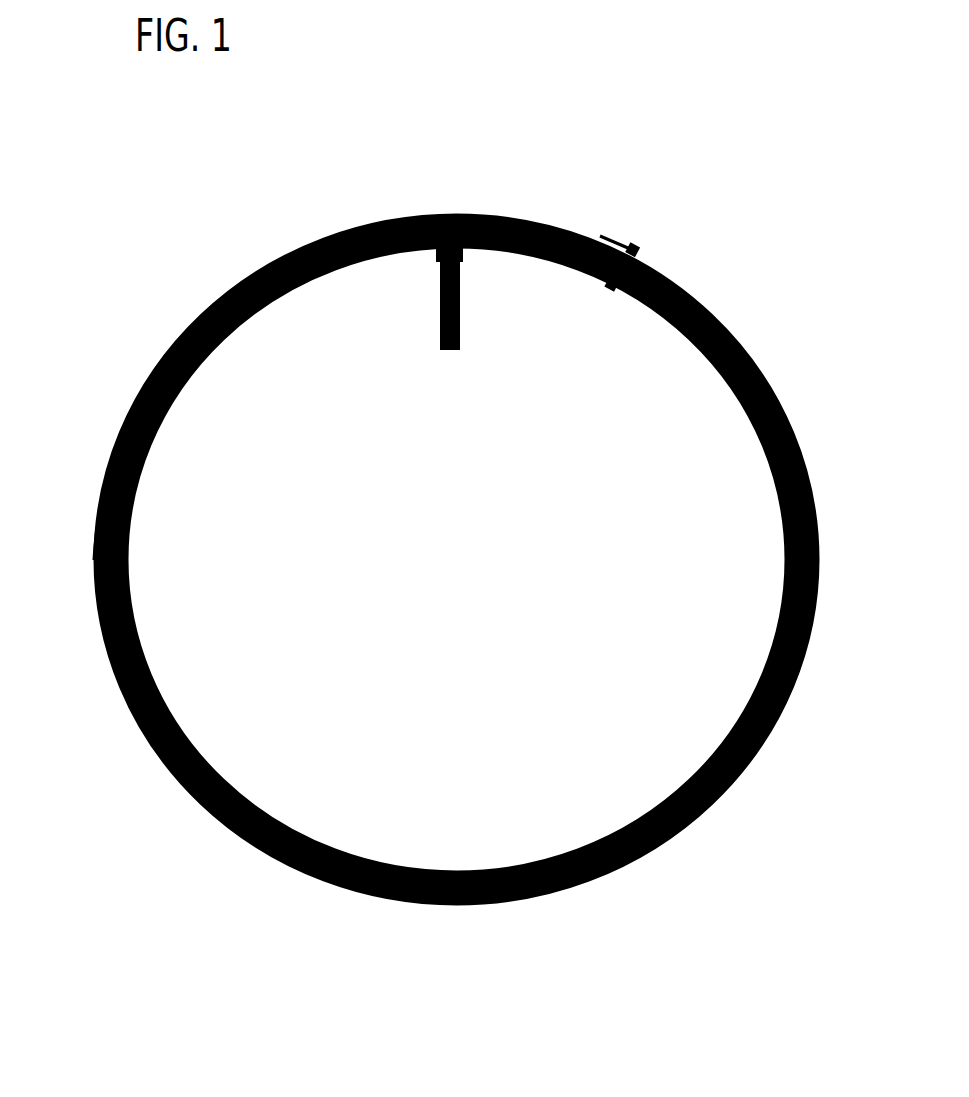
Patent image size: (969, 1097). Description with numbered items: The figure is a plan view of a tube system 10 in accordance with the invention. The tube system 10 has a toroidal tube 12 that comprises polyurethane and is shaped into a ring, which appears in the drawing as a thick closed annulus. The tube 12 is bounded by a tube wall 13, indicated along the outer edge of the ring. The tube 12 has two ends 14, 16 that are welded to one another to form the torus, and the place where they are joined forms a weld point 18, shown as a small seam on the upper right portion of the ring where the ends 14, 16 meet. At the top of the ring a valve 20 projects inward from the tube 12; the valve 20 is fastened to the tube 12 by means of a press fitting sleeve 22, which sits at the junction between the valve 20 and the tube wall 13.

The tube system 10 is at (170, 852).
The toroidal tube 12 is at (197, 318).
The tube wall 13 is at (135, 403).
The first tube end 14 is at (620, 239).
The second tube end 16 is at (655, 252).
The weld point 18 is at (632, 250).
The valve 20 is at (438, 322).
The press fitting sleeve 22 is at (460, 263).